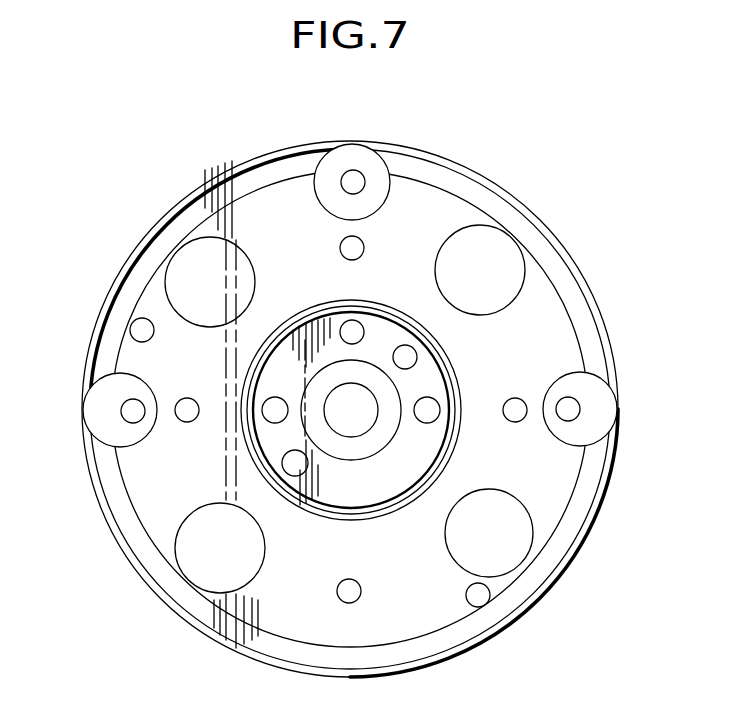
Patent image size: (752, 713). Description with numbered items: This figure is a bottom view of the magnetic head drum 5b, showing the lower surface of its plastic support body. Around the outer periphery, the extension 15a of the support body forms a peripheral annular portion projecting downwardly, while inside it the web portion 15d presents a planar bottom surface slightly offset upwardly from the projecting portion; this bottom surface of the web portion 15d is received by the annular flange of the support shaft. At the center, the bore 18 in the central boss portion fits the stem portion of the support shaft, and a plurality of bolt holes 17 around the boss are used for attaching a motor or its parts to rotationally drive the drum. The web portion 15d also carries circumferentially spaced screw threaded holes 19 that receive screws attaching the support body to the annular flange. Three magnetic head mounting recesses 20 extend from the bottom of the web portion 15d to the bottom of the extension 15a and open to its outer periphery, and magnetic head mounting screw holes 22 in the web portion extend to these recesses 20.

The magnetic head drum 5b is at (517, 173).
The extension of the support body 15a is at (528, 224).
The web portion 15d is at (540, 340).
The bolt holes 17 is at (434, 415).
The bore 18 is at (357, 395).
The screw threaded holes 19 is at (186, 402).
The magnetic head mounting recesses 20 is at (318, 183).
The magnetic head mounting screw holes 22 is at (358, 180).